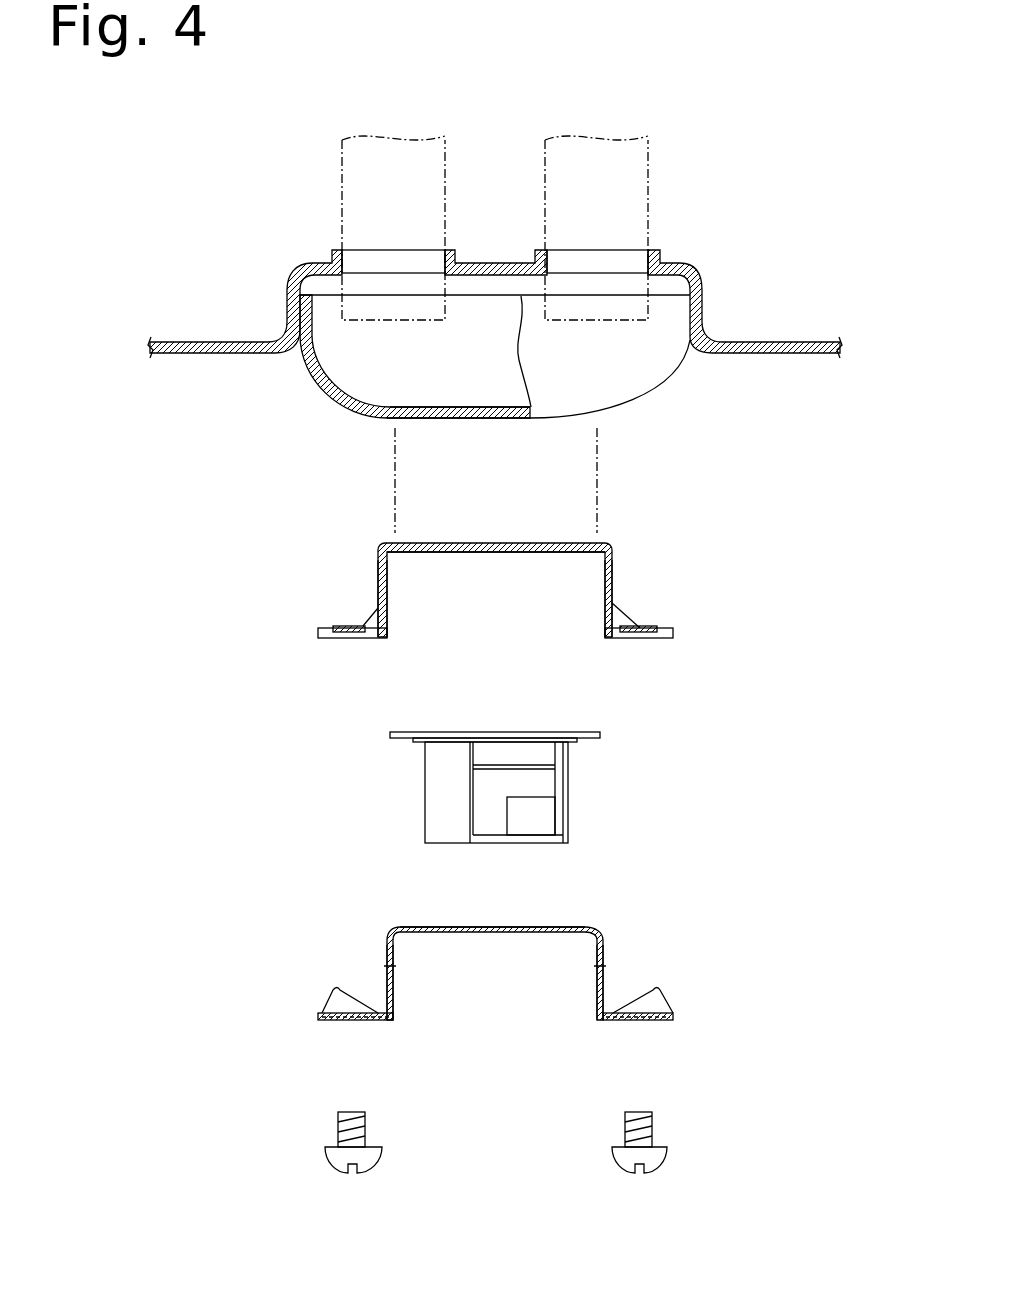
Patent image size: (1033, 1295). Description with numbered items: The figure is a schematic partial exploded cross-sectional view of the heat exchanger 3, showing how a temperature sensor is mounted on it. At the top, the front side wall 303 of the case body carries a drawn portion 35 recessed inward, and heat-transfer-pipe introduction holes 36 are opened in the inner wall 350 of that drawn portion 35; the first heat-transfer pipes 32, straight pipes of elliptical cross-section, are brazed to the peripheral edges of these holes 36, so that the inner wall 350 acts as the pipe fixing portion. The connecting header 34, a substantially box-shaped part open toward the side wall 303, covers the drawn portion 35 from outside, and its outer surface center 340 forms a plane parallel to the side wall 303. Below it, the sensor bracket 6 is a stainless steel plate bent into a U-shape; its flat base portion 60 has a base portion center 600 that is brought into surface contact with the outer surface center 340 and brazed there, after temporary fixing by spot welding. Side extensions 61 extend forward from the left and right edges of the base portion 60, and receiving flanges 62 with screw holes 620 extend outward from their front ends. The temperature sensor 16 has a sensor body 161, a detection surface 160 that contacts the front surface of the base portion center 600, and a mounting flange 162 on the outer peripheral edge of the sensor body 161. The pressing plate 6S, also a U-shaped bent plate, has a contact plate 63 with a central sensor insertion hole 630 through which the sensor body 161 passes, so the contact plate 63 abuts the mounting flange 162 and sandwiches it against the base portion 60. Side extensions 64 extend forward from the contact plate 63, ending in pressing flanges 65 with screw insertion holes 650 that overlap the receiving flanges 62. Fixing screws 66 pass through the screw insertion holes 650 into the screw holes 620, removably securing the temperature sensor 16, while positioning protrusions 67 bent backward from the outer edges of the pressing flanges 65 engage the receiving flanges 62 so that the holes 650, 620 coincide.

The heat exchanger 3 is at (495, 329).
The first heat-transfer pipe 32 is at (342, 194).
The connecting header 34 is at (642, 434).
The drawn portion 35 is at (694, 350).
The heat-transfer-pipe introduction hole 36 is at (561, 242).
The front side wall 303 is at (206, 353).
The outer surface center 340 is at (477, 418).
The inner wall 350 is at (490, 275).
The sensor bracket 6 is at (494, 592).
The base portion 60 is at (543, 543).
The base portion center 600 is at (490, 552).
The side extension 61 is at (378, 578).
The receiving flange 62 is at (327, 640).
The screw hole 620 is at (351, 641).
The temperature sensor 16 is at (466, 754).
The detection surface 160 is at (511, 731).
The sensor body 161 is at (545, 784).
The mounting flange 162 is at (398, 740).
The pressing plate 6S is at (497, 994).
The contact plate 63 is at (420, 932).
The sensor insertion hole 630 is at (514, 934).
The side extension 64 is at (387, 960).
The pressing flange 65 is at (325, 1021).
The screw insertion hole 650 is at (345, 1022).
The fixing screw 66 is at (330, 1166).
The positioning protrusion 67 is at (330, 1000).